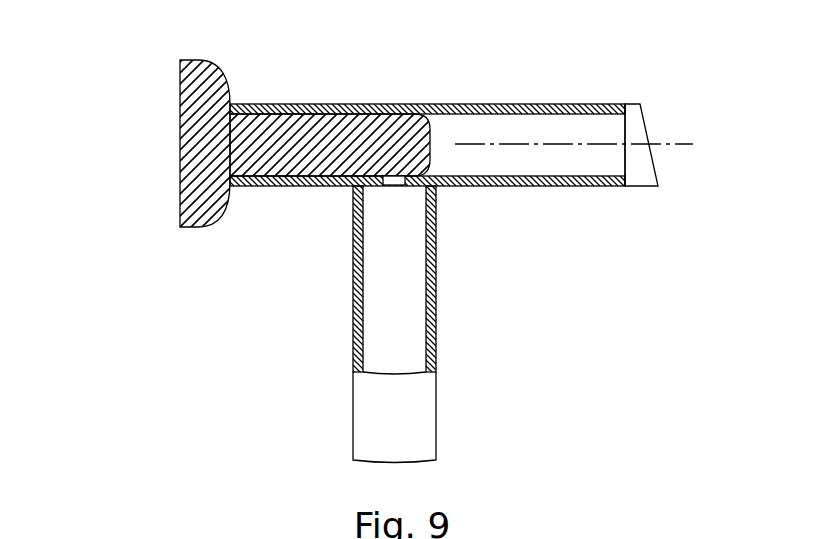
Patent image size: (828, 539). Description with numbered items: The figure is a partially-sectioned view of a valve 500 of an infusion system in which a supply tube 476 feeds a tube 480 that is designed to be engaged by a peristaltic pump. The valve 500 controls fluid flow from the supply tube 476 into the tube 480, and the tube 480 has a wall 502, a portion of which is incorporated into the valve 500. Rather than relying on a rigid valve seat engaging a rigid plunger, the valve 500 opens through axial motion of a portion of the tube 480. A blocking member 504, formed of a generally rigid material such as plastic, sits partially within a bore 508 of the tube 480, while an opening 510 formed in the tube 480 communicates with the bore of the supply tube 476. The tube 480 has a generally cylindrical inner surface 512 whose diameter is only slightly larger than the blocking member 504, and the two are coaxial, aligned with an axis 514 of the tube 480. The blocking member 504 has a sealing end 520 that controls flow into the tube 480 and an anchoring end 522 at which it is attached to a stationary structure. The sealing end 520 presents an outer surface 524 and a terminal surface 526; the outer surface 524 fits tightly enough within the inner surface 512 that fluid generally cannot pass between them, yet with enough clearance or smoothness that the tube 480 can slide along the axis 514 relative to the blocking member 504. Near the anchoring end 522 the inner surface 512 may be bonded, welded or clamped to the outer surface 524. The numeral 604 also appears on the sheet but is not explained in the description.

The supply tube 476 is at (466, 317).
The tube 480 is at (578, 224).
The valve 500 is at (222, 328).
The wall 502 is at (543, 104).
The blocking member 504 is at (148, 163).
The bore 508 is at (605, 128).
The opening 510 is at (392, 188).
The inner surface 512 is at (467, 127).
The axis 514 is at (640, 147).
The sealing end 520 is at (388, 97).
The anchoring end 522 is at (188, 229).
The outer surface 524 is at (323, 110).
The terminal surface 526 is at (430, 152).
The sheet label 604 is at (143, 529).